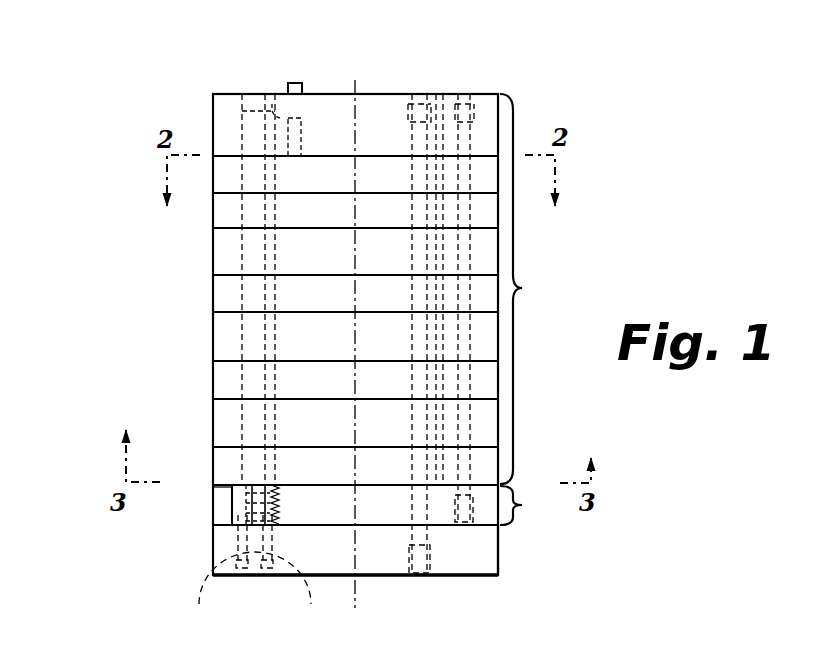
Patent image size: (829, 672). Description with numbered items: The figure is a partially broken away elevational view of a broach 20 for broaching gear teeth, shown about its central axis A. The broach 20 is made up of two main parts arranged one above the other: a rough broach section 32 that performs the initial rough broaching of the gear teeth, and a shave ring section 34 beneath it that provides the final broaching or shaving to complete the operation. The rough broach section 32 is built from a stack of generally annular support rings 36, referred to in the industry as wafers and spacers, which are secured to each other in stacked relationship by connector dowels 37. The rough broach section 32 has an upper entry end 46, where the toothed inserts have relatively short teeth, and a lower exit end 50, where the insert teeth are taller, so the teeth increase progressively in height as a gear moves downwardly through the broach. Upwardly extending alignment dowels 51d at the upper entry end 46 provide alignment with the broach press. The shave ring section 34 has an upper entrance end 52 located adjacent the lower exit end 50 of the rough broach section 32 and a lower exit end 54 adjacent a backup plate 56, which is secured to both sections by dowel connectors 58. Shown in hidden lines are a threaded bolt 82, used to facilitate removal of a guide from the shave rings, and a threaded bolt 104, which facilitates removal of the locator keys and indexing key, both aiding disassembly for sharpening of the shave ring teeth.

The broach 20 is at (88, 288).
The upper entry end 46 is at (211, 106).
The alignment dowels 51d is at (288, 83).
The support rings 36 is at (213, 211).
The lower exit end 50 is at (209, 478).
The upper entrance end 52 is at (209, 487).
The lower exit end 54 is at (209, 526).
The threaded bolt 104 is at (229, 363).
The threaded bolt 82 is at (263, 592).
The central axis A is at (355, 592).
The backup plate 56 is at (483, 553).
The connector dowels 37 is at (470, 243).
The dowel connectors 58 is at (430, 383).
The rough broach section 32 is at (528, 289).
The shave ring section 34 is at (394, 505).